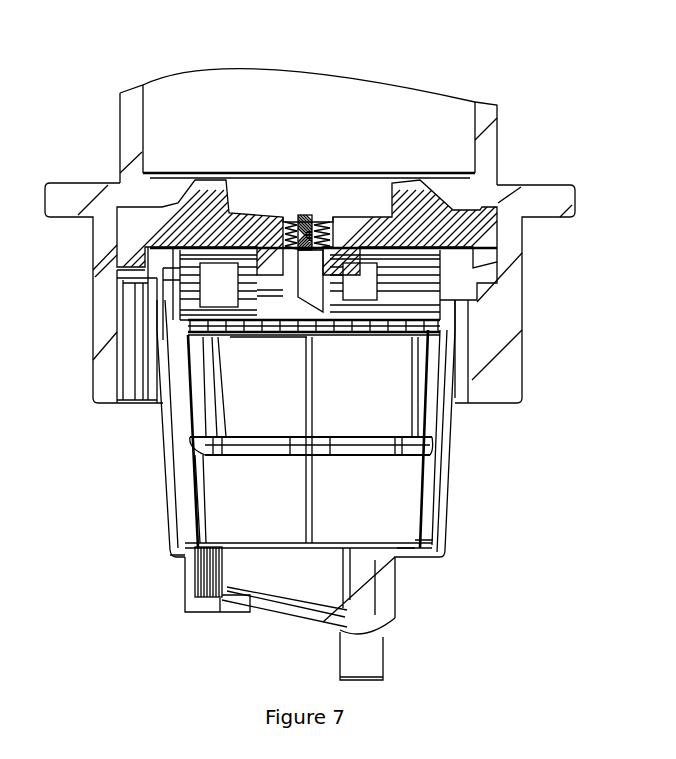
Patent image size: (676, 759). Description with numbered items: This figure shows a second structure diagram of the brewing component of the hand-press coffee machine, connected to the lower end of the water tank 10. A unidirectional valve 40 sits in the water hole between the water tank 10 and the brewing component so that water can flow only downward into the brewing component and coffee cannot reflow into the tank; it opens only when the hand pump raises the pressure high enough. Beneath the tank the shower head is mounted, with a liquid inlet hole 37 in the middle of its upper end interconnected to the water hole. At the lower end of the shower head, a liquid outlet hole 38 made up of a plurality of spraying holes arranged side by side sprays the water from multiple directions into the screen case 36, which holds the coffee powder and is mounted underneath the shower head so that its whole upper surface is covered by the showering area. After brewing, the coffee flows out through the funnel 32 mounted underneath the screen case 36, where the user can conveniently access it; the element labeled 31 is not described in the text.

The water tank 10 is at (283, 97).
The unidirectional valve 40 is at (308, 215).
The liquid inlet hole 37 is at (263, 295).
The filter cartridge 31 is at (393, 300).
The screen case 36 is at (225, 398).
The liquid outlet hole 38 is at (345, 328).
The funnel 32 is at (440, 523).